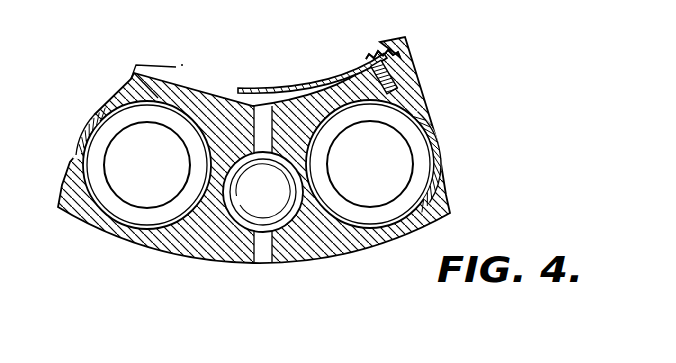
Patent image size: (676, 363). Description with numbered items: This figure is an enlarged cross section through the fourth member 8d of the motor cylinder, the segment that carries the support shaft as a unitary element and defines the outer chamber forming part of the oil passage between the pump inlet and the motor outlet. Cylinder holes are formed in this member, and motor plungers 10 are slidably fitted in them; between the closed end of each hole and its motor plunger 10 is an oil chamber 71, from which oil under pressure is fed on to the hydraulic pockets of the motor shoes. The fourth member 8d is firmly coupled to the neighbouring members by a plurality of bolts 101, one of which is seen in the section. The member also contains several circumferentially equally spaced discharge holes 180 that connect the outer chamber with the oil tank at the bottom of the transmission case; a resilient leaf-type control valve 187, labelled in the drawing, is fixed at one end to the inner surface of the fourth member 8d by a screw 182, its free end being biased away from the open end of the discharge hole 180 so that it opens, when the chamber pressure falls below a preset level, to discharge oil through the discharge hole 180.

The fourth member 8d is at (325, 247).
The motor plunger 10 is at (420, 177).
The oil chamber 71 is at (423, 118).
The bolt 101 is at (248, 200).
The discharge hole 180 is at (257, 127).
The sealing strip 187 is at (302, 91).
The screw 182 is at (366, 62).